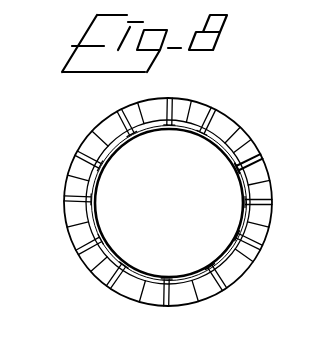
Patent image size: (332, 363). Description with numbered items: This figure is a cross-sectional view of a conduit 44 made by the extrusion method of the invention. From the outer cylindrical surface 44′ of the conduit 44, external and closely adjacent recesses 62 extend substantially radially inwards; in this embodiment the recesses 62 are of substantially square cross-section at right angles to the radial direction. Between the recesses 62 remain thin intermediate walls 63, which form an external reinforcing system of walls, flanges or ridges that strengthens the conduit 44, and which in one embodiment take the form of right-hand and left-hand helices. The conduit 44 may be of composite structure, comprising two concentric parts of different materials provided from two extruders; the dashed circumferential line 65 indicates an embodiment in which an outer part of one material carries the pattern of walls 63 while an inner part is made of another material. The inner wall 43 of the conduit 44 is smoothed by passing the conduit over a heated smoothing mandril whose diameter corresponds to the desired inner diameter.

The inner wall 43 is at (218, 146).
The conduit 44 is at (145, 278).
The outer cylindrical surface 44′ is at (231, 121).
The recesses 62 is at (103, 272).
The intermediate walls 63 is at (77, 153).
The dashed circumferential line 65 is at (257, 152).